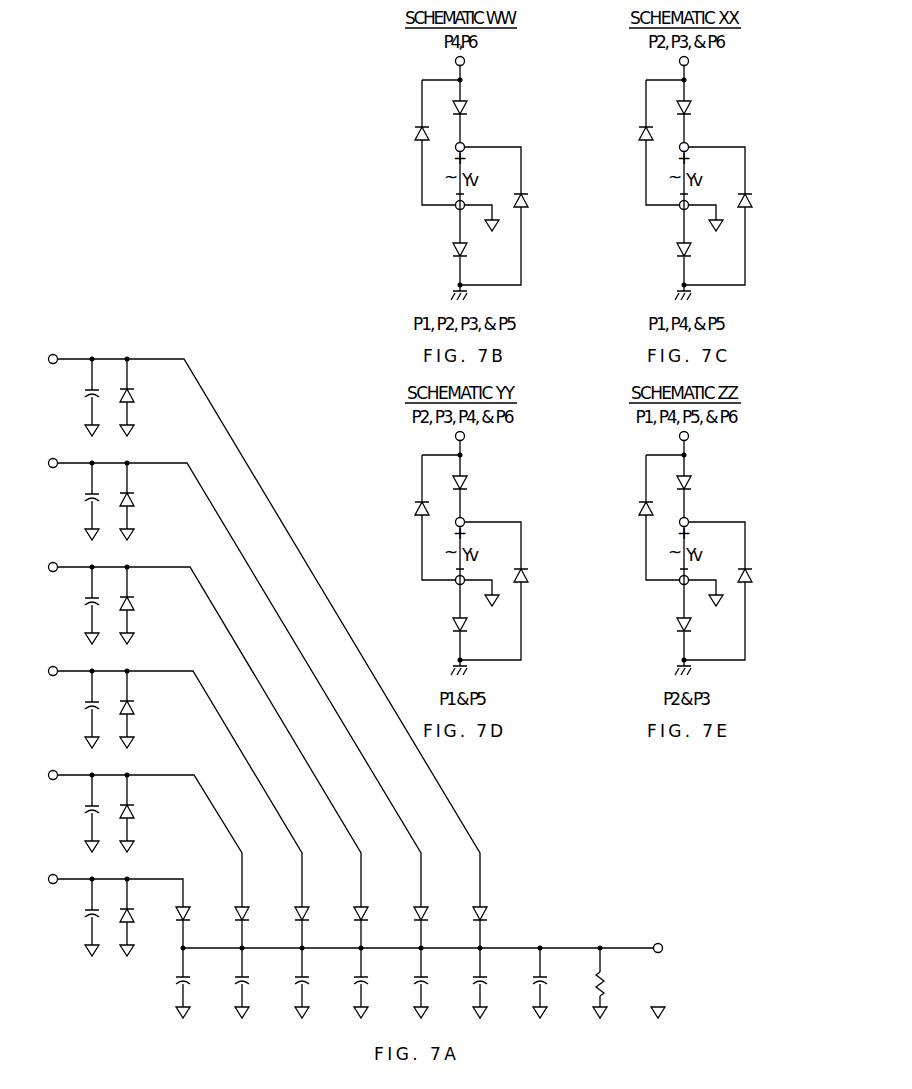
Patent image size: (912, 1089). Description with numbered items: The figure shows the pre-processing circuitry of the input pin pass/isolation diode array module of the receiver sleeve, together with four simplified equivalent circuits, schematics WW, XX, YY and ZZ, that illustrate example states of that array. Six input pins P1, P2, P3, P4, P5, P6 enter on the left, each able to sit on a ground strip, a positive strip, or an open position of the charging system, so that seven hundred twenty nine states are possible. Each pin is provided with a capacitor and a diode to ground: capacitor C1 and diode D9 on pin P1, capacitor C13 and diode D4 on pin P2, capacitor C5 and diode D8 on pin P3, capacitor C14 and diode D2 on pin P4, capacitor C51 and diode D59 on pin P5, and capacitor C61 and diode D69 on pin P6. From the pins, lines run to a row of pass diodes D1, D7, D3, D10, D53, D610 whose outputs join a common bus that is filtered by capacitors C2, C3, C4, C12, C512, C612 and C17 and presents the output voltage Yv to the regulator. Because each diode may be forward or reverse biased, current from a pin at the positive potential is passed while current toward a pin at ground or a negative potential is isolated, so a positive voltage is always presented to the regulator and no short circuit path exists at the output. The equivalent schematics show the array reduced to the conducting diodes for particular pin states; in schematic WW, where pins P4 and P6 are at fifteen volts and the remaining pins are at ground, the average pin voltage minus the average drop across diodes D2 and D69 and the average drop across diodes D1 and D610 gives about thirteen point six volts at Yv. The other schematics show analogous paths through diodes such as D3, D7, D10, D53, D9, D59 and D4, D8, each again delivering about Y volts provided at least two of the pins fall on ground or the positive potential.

In FIG. 7A, the input pin P1 is at (202, 724).
In FIG. 7A, the input pin P2 is at (173, 776).
In FIG. 7A, the input pin P3 is at (143, 828).
In FIG. 7A, the input pin P4 is at (113, 880).
In FIG. 7A, the input pin P5 is at (232, 672).
In FIG. 7A, the input pin P6 is at (262, 620).
In FIG. 7A, the capacitor C1 is at (84, 605).
In FIG. 7A, the capacitor C2 is at (193, 983).
In FIG. 7A, the capacitor C3 is at (252, 983).
In FIG. 7A, the capacitor C4 is at (312, 983).
In FIG. 7A, the capacitor C5 is at (84, 813).
In FIG. 7A, the capacitor C12 is at (374, 983).
In FIG. 7A, the capacitor C13 is at (80, 709).
In FIG. 7A, the capacitor C14 is at (80, 917).
In FIG. 7A, the capacitor C17 is at (553, 983).
In FIG. 7A, the capacitor C51 is at (80, 501).
In FIG. 7A, the capacitor C61 is at (80, 397).
In FIG. 7A, the capacitor C512 is at (438, 983).
In FIG. 7A, the capacitor C612 is at (497, 983).
In FIG. 7B, the diode D1 is at (477, 113).
In FIG. 7C, the diode D1 is at (757, 214).
In FIG. 7D, the diode D1 is at (477, 486).
In FIG. 7E, the diode D1 is at (702, 495).
In FIG. 7A, the diode D1 is at (193, 926).
In FIG. 7B, the diode D2 is at (409, 136).
In FIG. 7C, the diode D2 is at (670, 255).
In FIG. 7D, the diode D2 is at (409, 516).
In FIG. 7E, the diode D2 is at (633, 526).
In FIG. 7A, the diode D2 is at (137, 917).
In FIG. 7B, the diode D3 is at (532, 213).
In FIG. 7C, the diode D3 is at (702, 104).
In FIG. 7D, the diode D3 is at (477, 490).
In FIG. 7E, the diode D3 is at (753, 577).
In FIG. 7A, the diode D3 is at (312, 926).
In FIG. 7B, the diode D4 is at (447, 256).
In FIG. 7C, the diode D4 is at (633, 136).
In FIG. 7D, the diode D4 is at (409, 526).
In FIG. 7E, the diode D4 is at (671, 626).
In FIG. 7A, the diode D4 is at (137, 709).
In FIG. 7B, the diode D7 is at (532, 203).
In FIG. 7C, the diode D7 is at (702, 114).
In FIG. 7D, the diode D7 is at (477, 499).
In FIG. 7E, the diode D7 is at (753, 583).
In FIG. 7A, the diode D7 is at (252, 926).
In FIG. 7B, the diode D8 is at (447, 266).
In FIG. 7C, the diode D8 is at (633, 146).
In FIG. 7D, the diode D8 is at (409, 529).
In FIG. 7E, the diode D8 is at (671, 632).
In FIG. 7A, the diode D8 is at (137, 813).
In FIG. 7B, the diode D9 is at (447, 269).
In FIG. 7C, the diode D9 is at (670, 263).
In FIG. 7D, the diode D9 is at (447, 634).
In FIG. 7E, the diode D9 is at (702, 484).
In FIG. 7A, the diode D9 is at (137, 605).
In FIG. 7B, the diode D10 is at (532, 218).
In FIG. 7C, the diode D10 is at (757, 218).
In FIG. 7D, the diode D10 is at (533, 578).
In FIG. 7E, the diode D10 is at (633, 516).
In FIG. 7A, the diode D10 is at (374, 926).
In FIG. 7B, the diode D53 is at (532, 218).
In FIG. 7C, the diode D53 is at (757, 218).
In FIG. 7D, the diode D53 is at (533, 583).
In FIG. 7E, the diode D53 is at (702, 500).
In FIG. 7A, the diode D53 is at (434, 926).
In FIG. 7B, the diode D59 is at (447, 269).
In FIG. 7C, the diode D59 is at (670, 263).
In FIG. 7D, the diode D59 is at (447, 636).
In FIG. 7E, the diode D59 is at (633, 529).
In FIG. 7A, the diode D59 is at (140, 501).
In FIG. 7B, the diode D69 is at (409, 141).
In FIG. 7C, the diode D69 is at (633, 146).
In FIG. 7D, the diode D69 is at (409, 529).
In FIG. 7E, the diode D69 is at (633, 529).
In FIG. 7A, the diode D69 is at (140, 397).
In FIG. 7B, the diode D610 is at (477, 116).
In FIG. 7C, the diode D610 is at (702, 117).
In FIG. 7D, the diode D610 is at (477, 499).
In FIG. 7E, the diode D610 is at (702, 500).
In FIG. 7A, the diode D610 is at (497, 926).
In FIG. 7A, the output voltage Yv is at (657, 981).